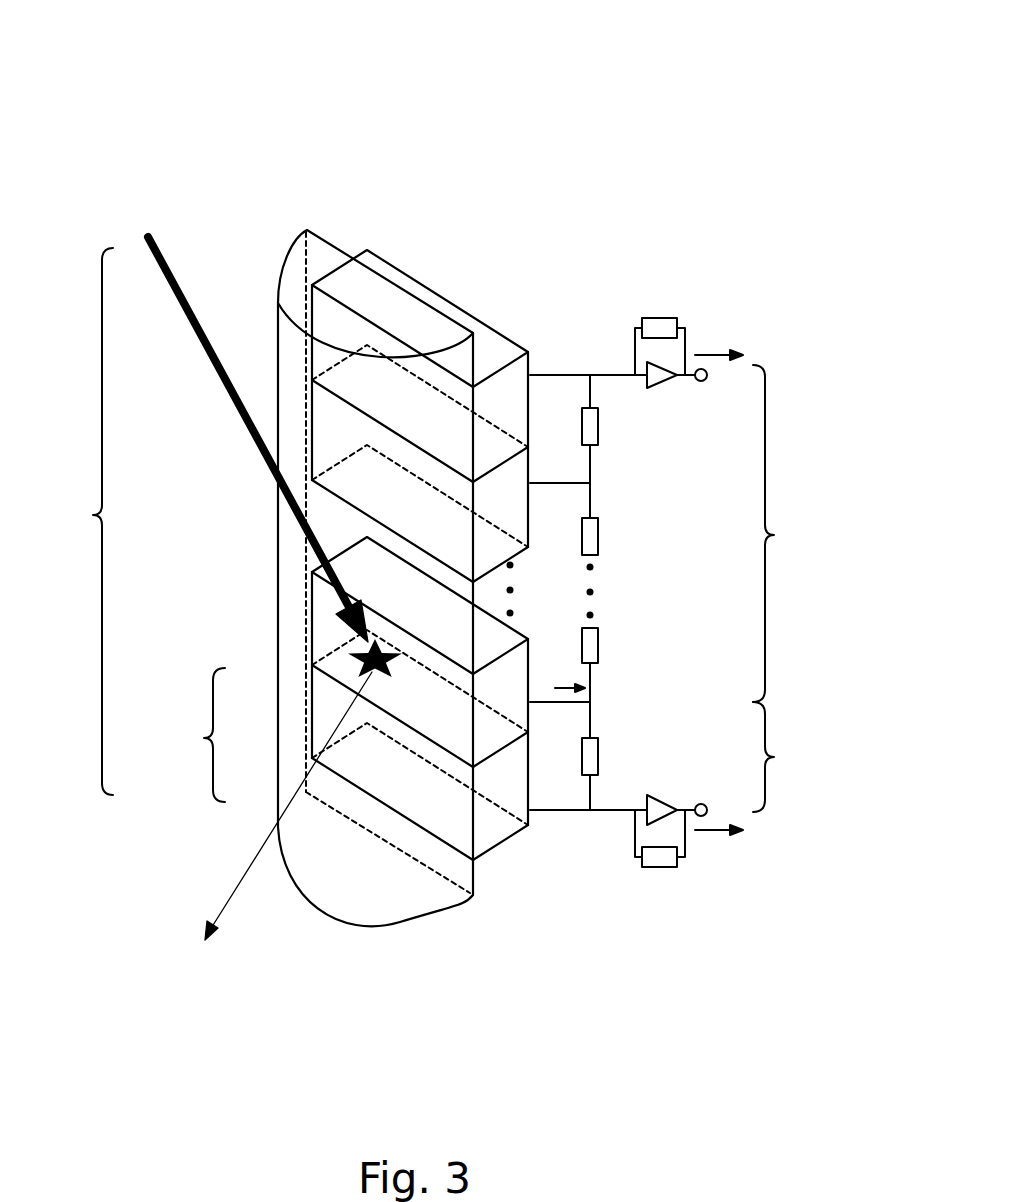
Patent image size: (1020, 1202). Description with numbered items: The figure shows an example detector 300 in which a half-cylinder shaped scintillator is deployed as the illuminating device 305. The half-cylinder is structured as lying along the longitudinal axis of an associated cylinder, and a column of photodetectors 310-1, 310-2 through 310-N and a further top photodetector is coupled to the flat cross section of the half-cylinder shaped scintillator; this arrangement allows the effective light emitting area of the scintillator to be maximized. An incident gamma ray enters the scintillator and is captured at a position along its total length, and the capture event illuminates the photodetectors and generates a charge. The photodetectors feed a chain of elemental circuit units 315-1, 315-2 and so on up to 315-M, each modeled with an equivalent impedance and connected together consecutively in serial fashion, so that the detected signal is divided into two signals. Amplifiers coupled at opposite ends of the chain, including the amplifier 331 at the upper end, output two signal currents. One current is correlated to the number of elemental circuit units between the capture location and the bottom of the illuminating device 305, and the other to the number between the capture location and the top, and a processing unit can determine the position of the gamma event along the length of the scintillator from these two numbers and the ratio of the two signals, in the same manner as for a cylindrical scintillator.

The detector 300 is at (247, 108).
The illuminating device 305 is at (350, 292).
The photodetector 310-N is at (500, 507).
The photodetector 310-2 is at (500, 712).
The photodetector 310-1 is at (485, 827).
The amplifier 331 is at (658, 318).
The elemental circuit unit 315-M is at (598, 428).
The elemental circuit unit 315-2 is at (598, 645).
The elemental circuit unit 315-1 is at (598, 757).